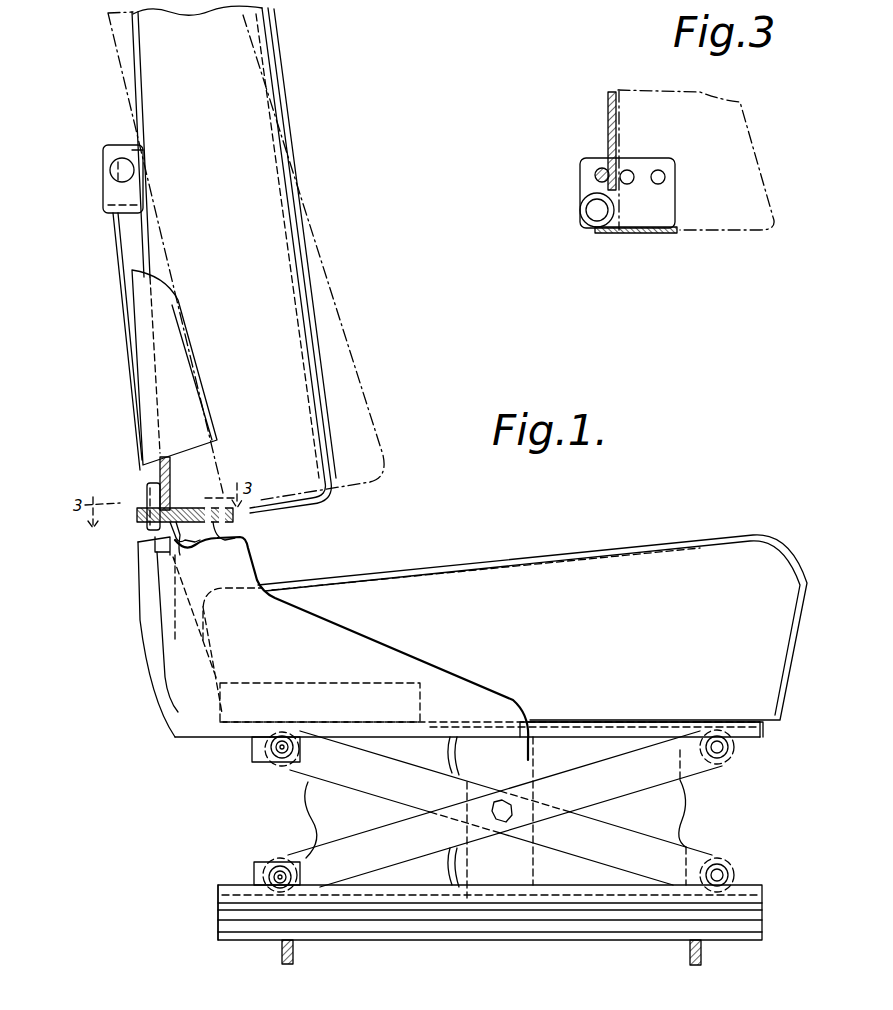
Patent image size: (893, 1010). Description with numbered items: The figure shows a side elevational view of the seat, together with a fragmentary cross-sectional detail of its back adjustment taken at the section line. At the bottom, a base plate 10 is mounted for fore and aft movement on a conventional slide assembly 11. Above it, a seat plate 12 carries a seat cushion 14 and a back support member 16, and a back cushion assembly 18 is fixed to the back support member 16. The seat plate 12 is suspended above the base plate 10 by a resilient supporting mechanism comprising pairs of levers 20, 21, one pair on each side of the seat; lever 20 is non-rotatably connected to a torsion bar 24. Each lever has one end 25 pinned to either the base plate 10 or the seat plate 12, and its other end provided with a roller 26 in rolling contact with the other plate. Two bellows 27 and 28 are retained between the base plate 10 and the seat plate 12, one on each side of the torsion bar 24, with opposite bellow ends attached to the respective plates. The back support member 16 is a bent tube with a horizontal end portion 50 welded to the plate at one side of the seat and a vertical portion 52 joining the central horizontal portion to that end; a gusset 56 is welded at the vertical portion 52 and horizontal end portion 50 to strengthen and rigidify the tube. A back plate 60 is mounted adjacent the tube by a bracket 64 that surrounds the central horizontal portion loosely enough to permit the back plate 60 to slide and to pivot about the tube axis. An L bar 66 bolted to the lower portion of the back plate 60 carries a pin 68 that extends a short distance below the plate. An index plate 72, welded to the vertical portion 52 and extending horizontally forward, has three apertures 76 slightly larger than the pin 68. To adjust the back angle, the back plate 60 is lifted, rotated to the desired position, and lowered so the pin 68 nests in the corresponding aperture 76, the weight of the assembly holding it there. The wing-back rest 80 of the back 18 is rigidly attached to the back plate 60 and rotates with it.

In FIG. 1, the base plate 10 is at (222, 885).
In FIG. 1, the slide assembly 11 is at (410, 913).
In FIG. 1, the seat plate 12 is at (760, 731).
In FIG. 1, the seat cushion 14 is at (618, 644).
In FIG. 1, the back support member 16 is at (148, 613).
In FIG. 1, the back cushion assembly 18 is at (334, 181).
In FIG. 1, the lever 20 is at (628, 791).
In FIG. 1, the lever 21 is at (611, 854).
In FIG. 1, the torsion bar 24 is at (502, 801).
In FIG. 1, the lever end 25 is at (722, 757).
In FIG. 1, the roller 26 is at (270, 762).
In FIG. 1, the bellows 27 is at (660, 822).
In FIG. 1, the bellows 28 is at (362, 826).
In FIG. 1, the horizontal end portion 50 is at (326, 684).
In FIG. 1, the vertical portion 52 is at (130, 394).
In FIG. 3, the vertical portion 52 is at (584, 226).
In FIG. 1, the gusset 56 is at (284, 652).
In FIG. 1, the back plate 60 is at (133, 40).
In FIG. 1, the bracket 64 is at (106, 150).
In FIG. 1, the L bar 66 is at (165, 482).
In FIG. 3, the L bar 66 is at (608, 122).
In FIG. 1, the pin 68 is at (147, 497).
In FIG. 3, the pin 68 is at (596, 178).
In FIG. 1, the index plate 72 is at (215, 530).
In FIG. 3, the index plate 72 is at (655, 212).
In FIG. 1, the apertures 76 is at (190, 532).
In FIG. 3, the apertures 76 is at (659, 170).
In FIG. 1, the wing-back rest 80 is at (223, 184).
In FIG. 3, the wing-back rest 80 is at (732, 179).